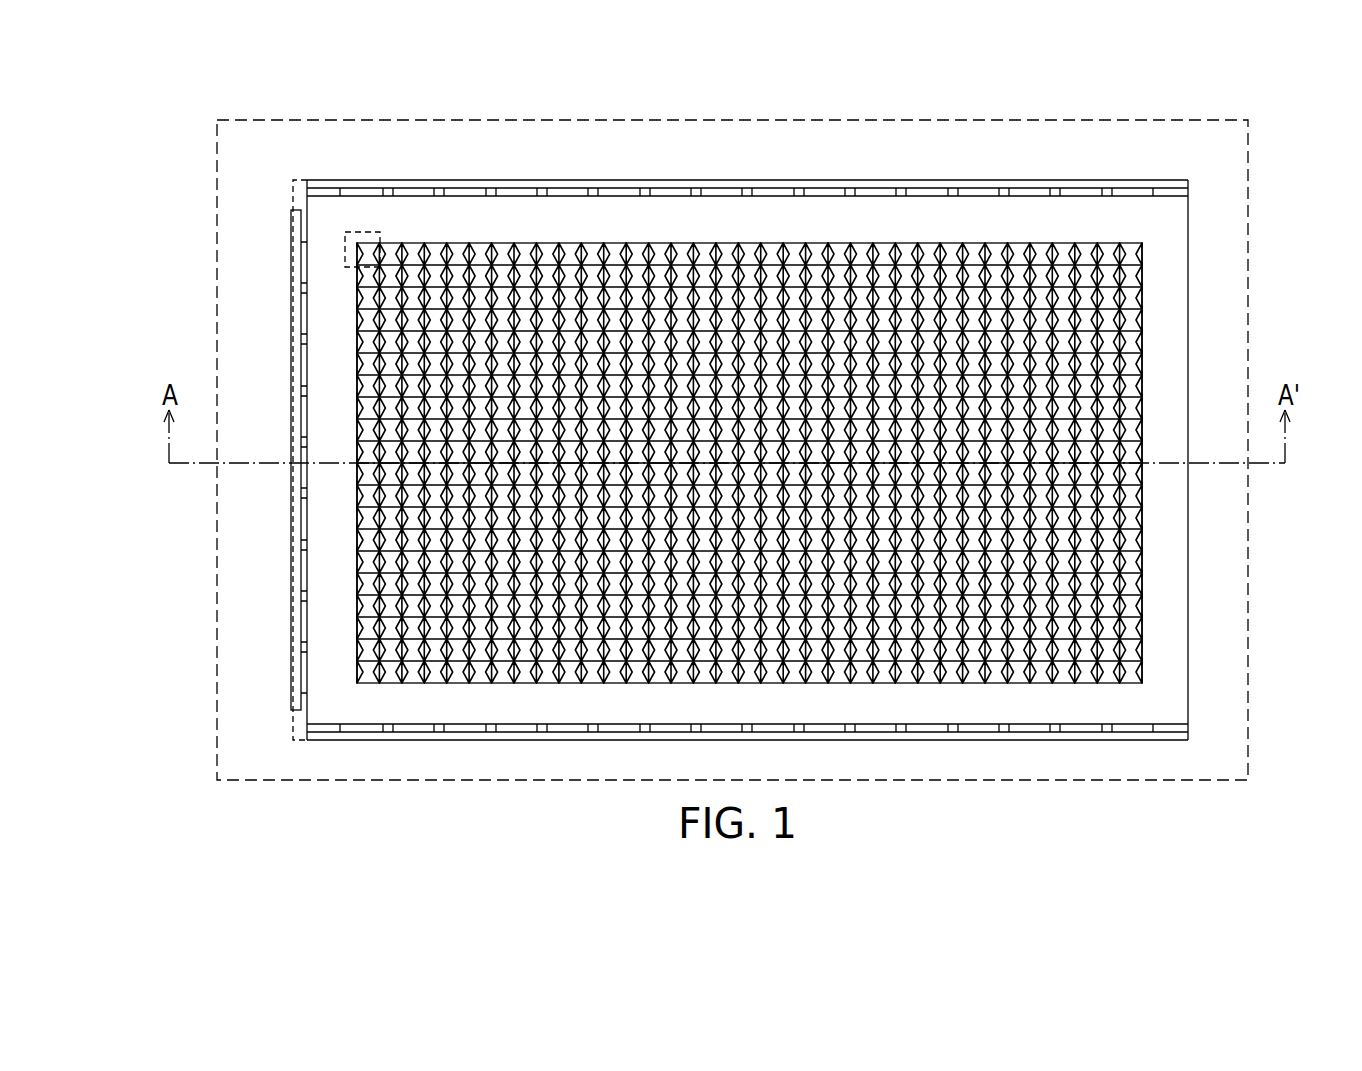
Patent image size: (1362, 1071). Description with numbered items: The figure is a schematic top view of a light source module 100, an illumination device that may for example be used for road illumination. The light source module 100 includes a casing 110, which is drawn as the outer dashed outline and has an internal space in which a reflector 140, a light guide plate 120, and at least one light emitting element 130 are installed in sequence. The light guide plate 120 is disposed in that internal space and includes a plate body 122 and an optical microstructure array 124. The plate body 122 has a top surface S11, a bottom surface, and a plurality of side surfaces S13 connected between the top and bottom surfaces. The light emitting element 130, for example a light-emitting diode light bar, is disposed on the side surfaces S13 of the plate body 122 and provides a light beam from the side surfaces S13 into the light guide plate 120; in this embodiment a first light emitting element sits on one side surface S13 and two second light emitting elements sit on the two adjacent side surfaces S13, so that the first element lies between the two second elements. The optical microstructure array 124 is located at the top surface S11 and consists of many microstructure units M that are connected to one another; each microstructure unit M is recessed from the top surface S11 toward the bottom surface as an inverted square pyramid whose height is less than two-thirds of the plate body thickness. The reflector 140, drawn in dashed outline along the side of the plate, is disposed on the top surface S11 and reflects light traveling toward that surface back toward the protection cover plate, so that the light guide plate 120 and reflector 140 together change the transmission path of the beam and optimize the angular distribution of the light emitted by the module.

The light source module 100 is at (1328, 797).
The casing 110 is at (1250, 272).
The light guide plate 120 is at (1302, 48).
The plate body 122 is at (710, 207).
The optical microstructure array 124 is at (612, 243).
The light emitting element 130 is at (1175, 48).
The reflector 140 is at (297, 178).
The microstructure unit M is at (378, 232).
The top surface S11 is at (1181, 596).
The side surface S13 is at (1202, 728).